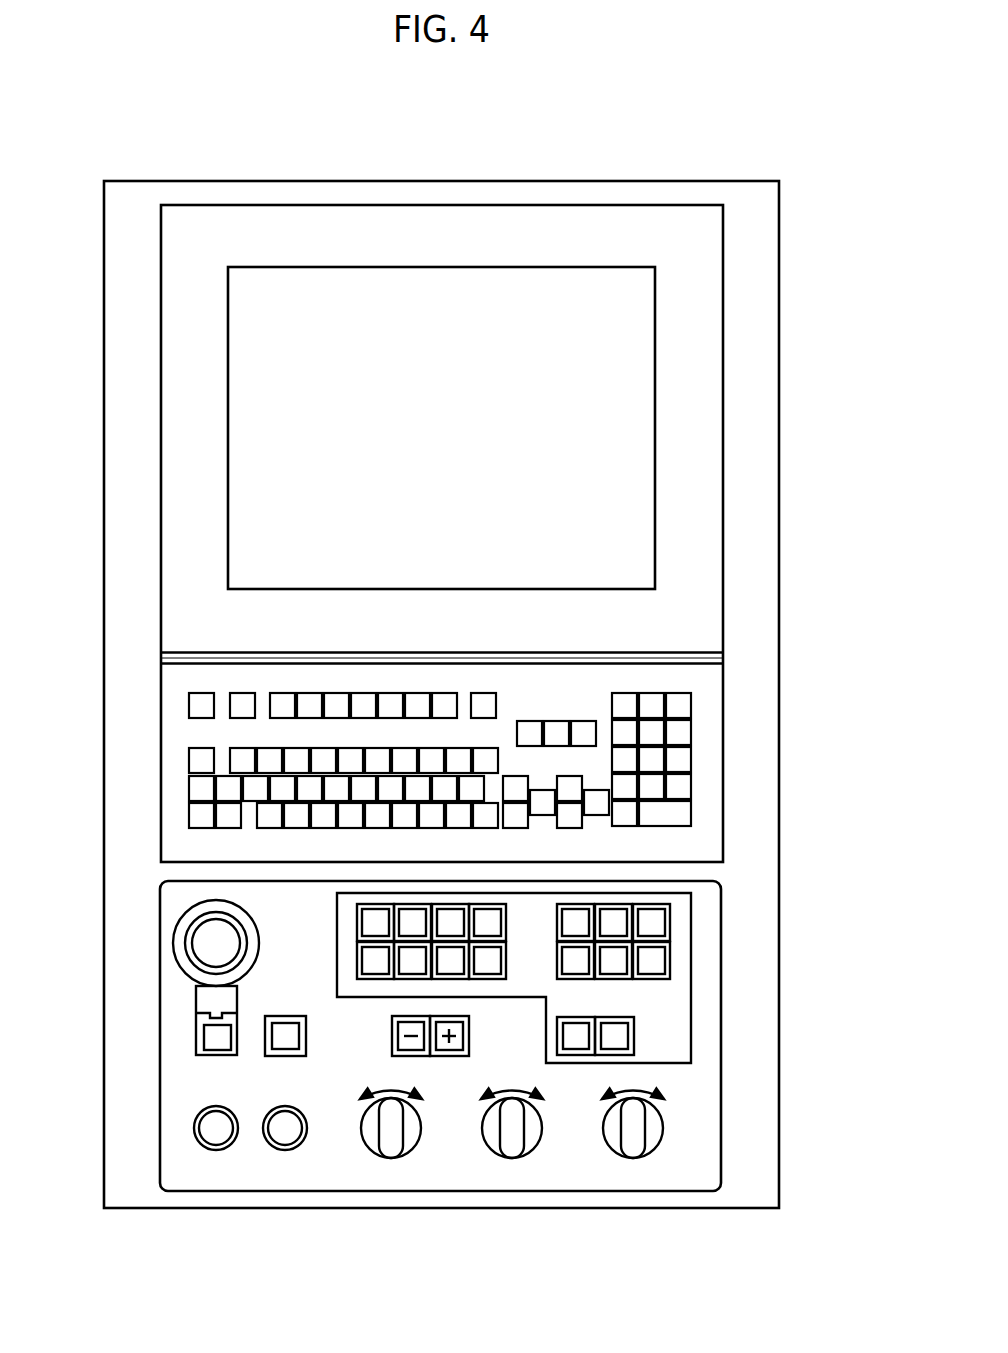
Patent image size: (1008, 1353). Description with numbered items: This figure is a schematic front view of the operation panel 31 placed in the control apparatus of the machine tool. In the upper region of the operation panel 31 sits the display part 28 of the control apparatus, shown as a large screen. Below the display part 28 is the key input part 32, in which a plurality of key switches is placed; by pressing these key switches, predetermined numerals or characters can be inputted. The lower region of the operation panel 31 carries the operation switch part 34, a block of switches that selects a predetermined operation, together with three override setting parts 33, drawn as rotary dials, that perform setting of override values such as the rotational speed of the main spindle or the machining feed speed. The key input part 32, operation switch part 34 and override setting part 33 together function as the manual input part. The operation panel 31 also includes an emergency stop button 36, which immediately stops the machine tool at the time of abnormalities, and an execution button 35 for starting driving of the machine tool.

The operation panel 31 is at (686, 160).
The display part 28 is at (604, 428).
The key input part 32 is at (692, 760).
The operation switch part 34 is at (691, 962).
The emergency stop button 36 is at (195, 962).
The execution button 35 is at (290, 1149).
The override setting part 33 is at (410, 1137).